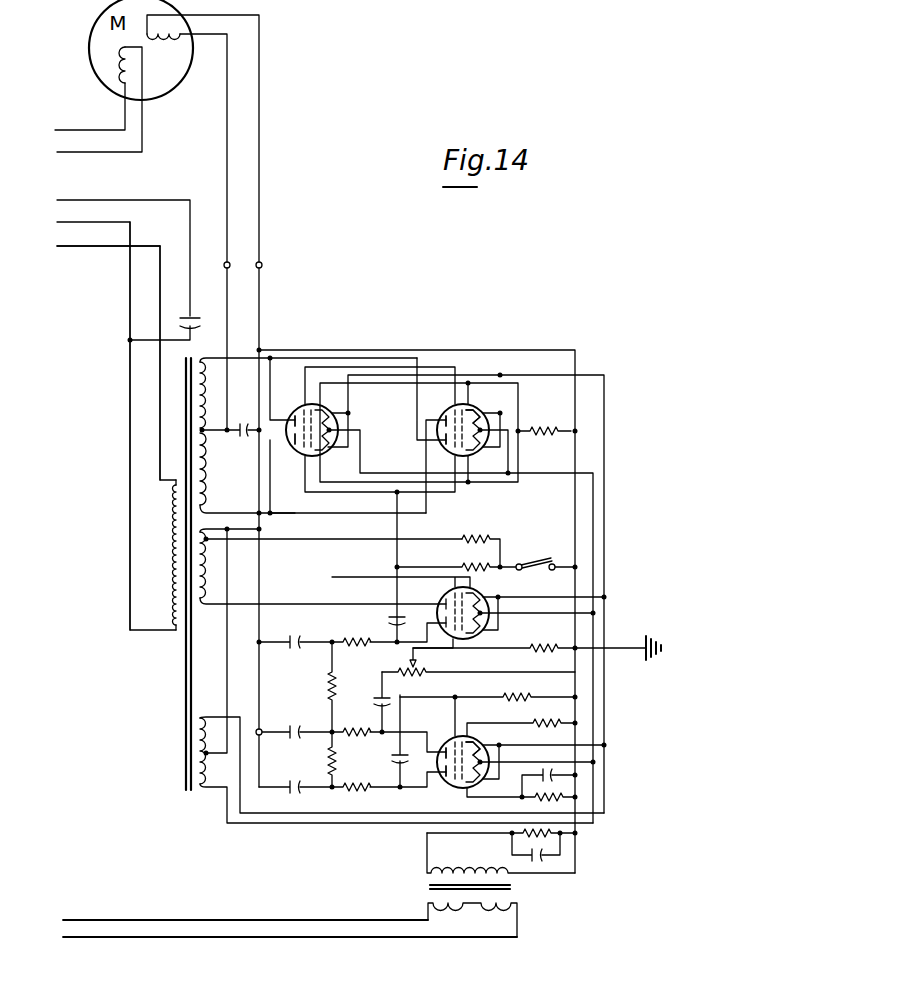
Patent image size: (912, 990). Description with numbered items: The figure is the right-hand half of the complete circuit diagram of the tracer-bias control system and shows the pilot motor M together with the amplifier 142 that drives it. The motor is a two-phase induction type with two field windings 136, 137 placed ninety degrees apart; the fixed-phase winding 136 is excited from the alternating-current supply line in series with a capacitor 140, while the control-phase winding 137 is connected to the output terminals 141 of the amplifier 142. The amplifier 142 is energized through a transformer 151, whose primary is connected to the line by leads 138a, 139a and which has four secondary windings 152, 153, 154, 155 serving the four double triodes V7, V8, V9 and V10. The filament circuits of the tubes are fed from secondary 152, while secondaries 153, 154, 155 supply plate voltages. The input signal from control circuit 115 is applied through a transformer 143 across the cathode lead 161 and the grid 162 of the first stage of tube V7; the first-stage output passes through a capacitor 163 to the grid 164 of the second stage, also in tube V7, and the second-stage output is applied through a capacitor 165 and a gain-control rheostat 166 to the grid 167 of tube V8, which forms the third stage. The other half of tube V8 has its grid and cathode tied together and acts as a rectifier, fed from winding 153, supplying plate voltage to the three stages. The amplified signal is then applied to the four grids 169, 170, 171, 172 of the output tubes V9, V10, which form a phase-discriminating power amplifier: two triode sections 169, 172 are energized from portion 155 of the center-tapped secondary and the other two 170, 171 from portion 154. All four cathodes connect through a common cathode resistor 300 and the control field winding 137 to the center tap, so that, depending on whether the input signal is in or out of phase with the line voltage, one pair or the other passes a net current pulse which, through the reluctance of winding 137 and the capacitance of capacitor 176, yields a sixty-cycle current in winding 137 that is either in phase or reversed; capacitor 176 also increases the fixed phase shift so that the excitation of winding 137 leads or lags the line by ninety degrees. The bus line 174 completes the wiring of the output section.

The control circuit 115 is at (230, 920).
The field winding 136 is at (118, 68).
The field winding 137 is at (168, 39).
The lead 138a is at (160, 435).
The lead 139a is at (132, 238).
The capacitor 140 is at (197, 326).
The output terminals 141 is at (229, 263).
The amplifier 142 is at (514, 527).
The transformer 143 is at (428, 887).
The transformer 151 is at (184, 650).
The secondary winding 152 is at (203, 788).
The secondary winding 153 is at (201, 607).
The secondary winding 154 is at (205, 503).
The secondary winding 155 is at (203, 364).
The cathode lead 161 is at (568, 883).
The grid 162 is at (440, 788).
The capacitor 163 is at (393, 760).
The grid 164 is at (462, 737).
The capacitor 165 is at (374, 701).
The gain-control rheostat 166 is at (400, 678).
The grid 167 is at (459, 641).
The grid 169 is at (456, 447).
The grid 170 is at (307, 454).
The grid 171 is at (472, 419).
The grid 172 is at (312, 405).
The supply lead 174 is at (492, 349).
The capacitor 176 is at (236, 440).
The cathode resistor 300 is at (564, 428).
The double triode V7 is at (420, 725).
The double triode V8 is at (408, 602).
The output tube V9 is at (279, 400).
The output tube V10 is at (426, 409).